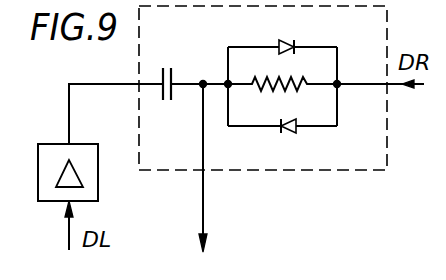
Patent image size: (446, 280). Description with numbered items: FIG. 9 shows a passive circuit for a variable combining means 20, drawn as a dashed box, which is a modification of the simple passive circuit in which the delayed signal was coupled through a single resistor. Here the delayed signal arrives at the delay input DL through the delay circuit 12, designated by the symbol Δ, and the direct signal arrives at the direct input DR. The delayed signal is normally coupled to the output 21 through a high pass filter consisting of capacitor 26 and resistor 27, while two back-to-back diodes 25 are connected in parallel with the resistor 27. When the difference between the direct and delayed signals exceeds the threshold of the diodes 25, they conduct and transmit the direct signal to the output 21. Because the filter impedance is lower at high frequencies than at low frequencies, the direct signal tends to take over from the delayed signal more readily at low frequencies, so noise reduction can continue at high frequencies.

The delay circuit 12 is at (98, 191).
The variable combining means 20 is at (258, 171).
The output 21 is at (202, 204).
The back-to-back diodes 25 is at (291, 43).
The capacitor 26 is at (176, 66).
The resistor 27 is at (282, 88).